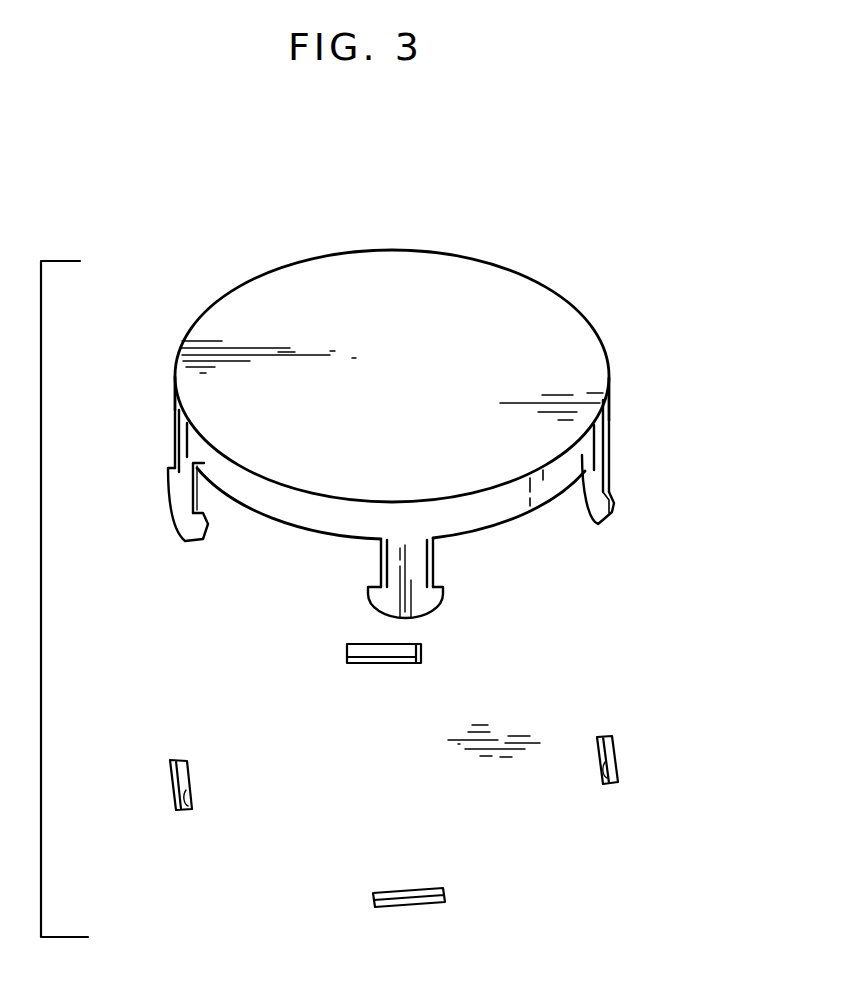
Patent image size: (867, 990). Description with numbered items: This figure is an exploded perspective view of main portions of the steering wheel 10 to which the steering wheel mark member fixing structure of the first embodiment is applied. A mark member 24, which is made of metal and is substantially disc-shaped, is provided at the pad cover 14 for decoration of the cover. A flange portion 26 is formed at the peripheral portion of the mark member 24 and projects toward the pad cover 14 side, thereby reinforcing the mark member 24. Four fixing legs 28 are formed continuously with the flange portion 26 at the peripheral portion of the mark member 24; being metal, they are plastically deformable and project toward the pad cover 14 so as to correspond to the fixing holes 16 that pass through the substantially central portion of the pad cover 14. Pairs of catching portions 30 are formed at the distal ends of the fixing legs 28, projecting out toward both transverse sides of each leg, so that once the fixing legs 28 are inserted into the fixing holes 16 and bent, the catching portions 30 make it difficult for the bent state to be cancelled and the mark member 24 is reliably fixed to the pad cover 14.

The steering wheel 10 is at (378, 215).
The pad cover 14 is at (500, 743).
The fixing holes 16 is at (392, 660).
The mark member 24 is at (598, 335).
The flange portion 26 is at (525, 505).
The fixing legs 28 is at (176, 470).
The catching portions 30 is at (168, 478).